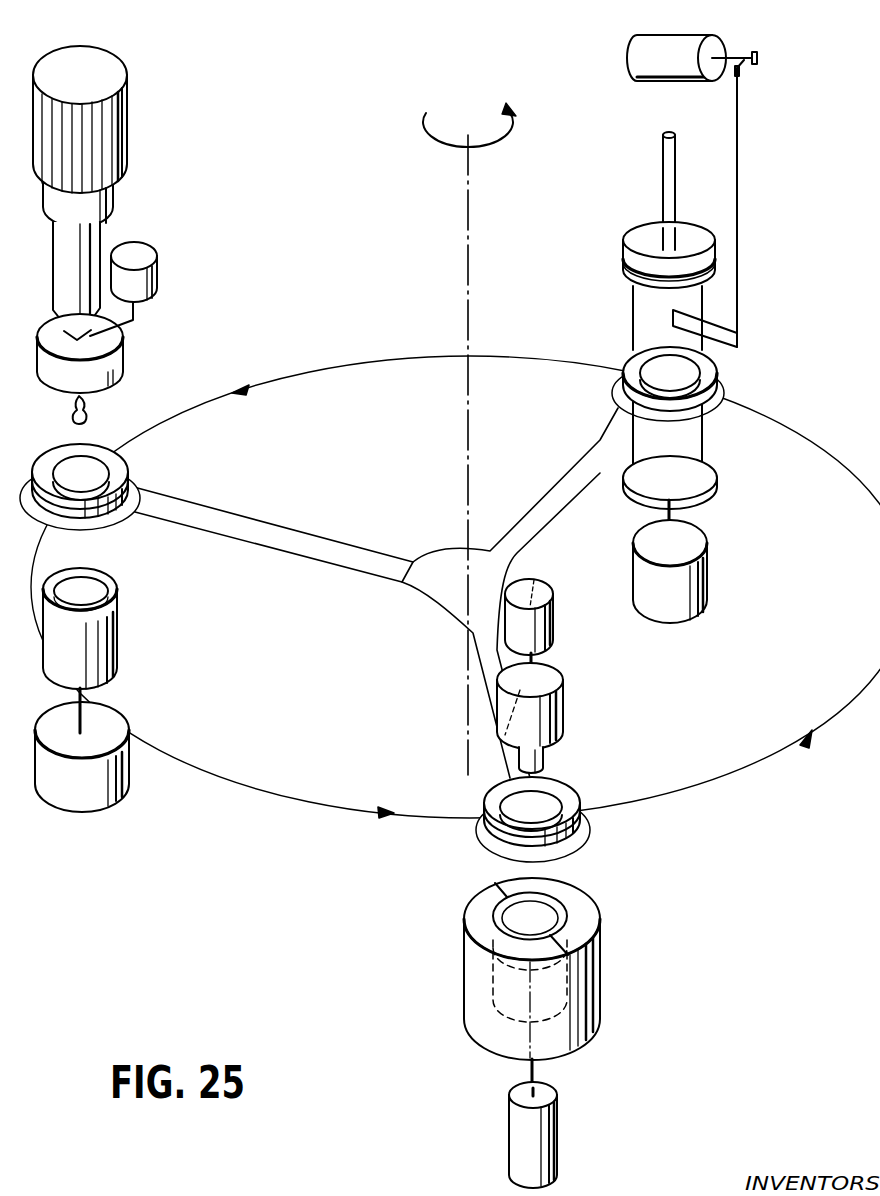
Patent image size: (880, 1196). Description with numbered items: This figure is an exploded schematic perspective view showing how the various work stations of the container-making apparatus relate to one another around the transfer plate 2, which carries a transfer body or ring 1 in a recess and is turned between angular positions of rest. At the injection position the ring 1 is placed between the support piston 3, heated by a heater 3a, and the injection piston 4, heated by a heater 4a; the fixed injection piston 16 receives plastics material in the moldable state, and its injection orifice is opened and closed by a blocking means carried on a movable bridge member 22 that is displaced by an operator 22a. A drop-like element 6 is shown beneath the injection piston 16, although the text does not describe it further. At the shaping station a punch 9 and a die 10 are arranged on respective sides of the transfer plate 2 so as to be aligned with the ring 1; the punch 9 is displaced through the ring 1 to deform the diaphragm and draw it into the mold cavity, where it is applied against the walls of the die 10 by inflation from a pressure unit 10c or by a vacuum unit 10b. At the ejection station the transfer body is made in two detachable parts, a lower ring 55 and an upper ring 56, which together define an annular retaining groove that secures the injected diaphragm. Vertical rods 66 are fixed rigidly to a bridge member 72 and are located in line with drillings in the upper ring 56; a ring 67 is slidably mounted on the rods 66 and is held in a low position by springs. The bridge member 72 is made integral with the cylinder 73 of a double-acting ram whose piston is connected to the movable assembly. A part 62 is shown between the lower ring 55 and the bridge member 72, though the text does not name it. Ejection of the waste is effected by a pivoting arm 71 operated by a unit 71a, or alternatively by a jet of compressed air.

The transfer body or ring 1 is at (112, 472).
The transfer plate 2 is at (250, 527).
The support piston 3 is at (120, 642).
The heater 3a is at (128, 778).
The injection piston 4 is at (68, 272).
The heater 4a is at (130, 142).
The drop 6 is at (90, 413).
The punch 9 is at (545, 755).
The die 10 is at (600, 972).
The vacuum unit 10b is at (558, 1140).
The pressure unit 10c is at (553, 628).
The fixed injection piston 16 is at (125, 363).
The movable bridge member 22 is at (137, 322).
The operator 22a is at (158, 270).
The lower ring 55 is at (712, 372).
The upper ring 56 is at (622, 278).
The tube 62 is at (703, 448).
The vertical rods 66 is at (632, 330).
The ring 67 is at (612, 240).
The pivoting arm 71 is at (742, 348).
The unit 71a is at (722, 45).
The bridge member 72 is at (714, 490).
The cylinder 73 is at (706, 578).